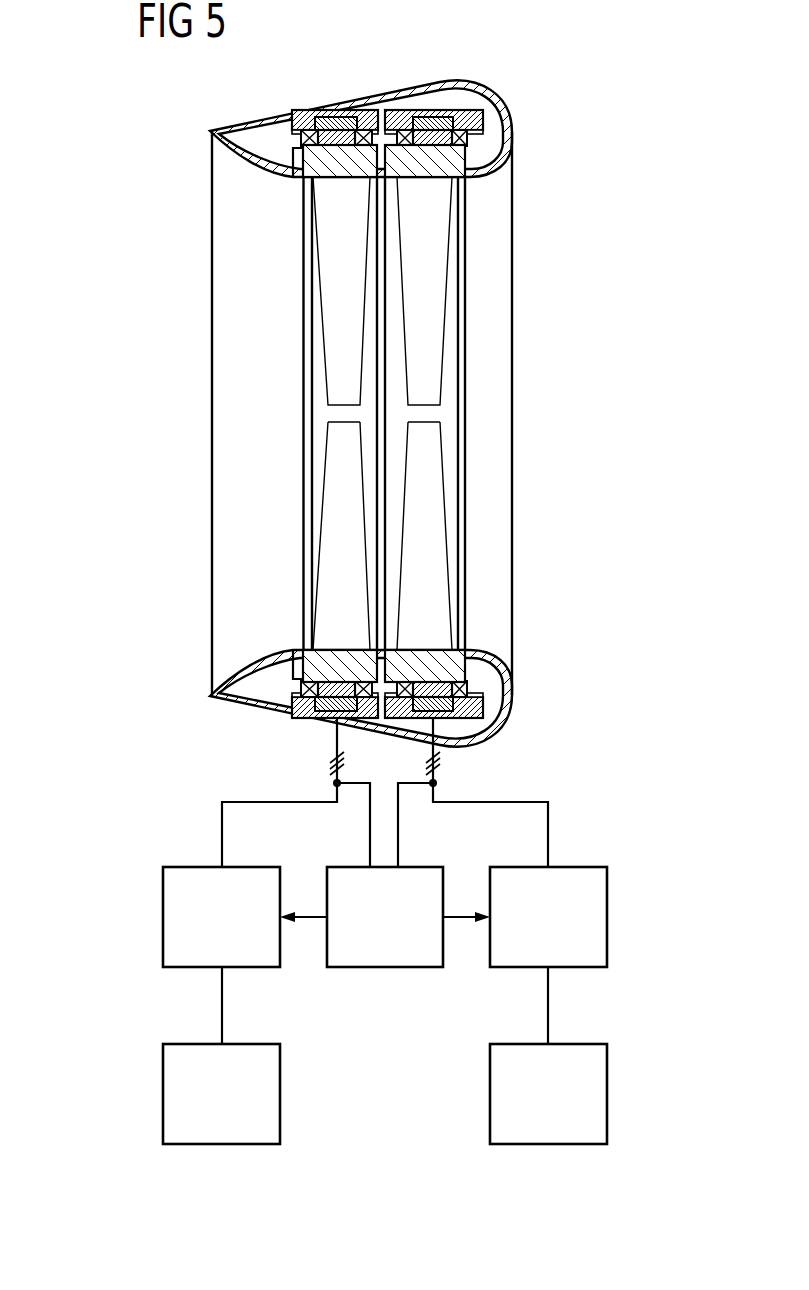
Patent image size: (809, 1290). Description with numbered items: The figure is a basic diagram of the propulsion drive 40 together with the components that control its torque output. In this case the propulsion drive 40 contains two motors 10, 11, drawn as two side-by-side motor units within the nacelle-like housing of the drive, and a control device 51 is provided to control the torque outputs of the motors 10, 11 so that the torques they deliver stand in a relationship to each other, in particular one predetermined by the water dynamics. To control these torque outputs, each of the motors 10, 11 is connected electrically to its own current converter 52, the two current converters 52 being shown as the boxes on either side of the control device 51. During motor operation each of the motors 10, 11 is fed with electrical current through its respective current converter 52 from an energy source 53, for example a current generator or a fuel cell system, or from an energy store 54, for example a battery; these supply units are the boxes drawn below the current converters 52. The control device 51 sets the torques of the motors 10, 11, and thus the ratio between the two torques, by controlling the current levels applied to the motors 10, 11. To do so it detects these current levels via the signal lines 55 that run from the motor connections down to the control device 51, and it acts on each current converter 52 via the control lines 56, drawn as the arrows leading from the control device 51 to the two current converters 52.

The propulsion drive 40 is at (503, 84).
The motor 10 is at (452, 453).
The motor 11 is at (326, 456).
The signal lines 55 is at (398, 826).
The control device 51 is at (378, 968).
The current converter 52 is at (163, 920).
The energy source 53 is at (385, 1094).
The energy store 54 is at (163, 1107).
The control lines 56 is at (301, 920).